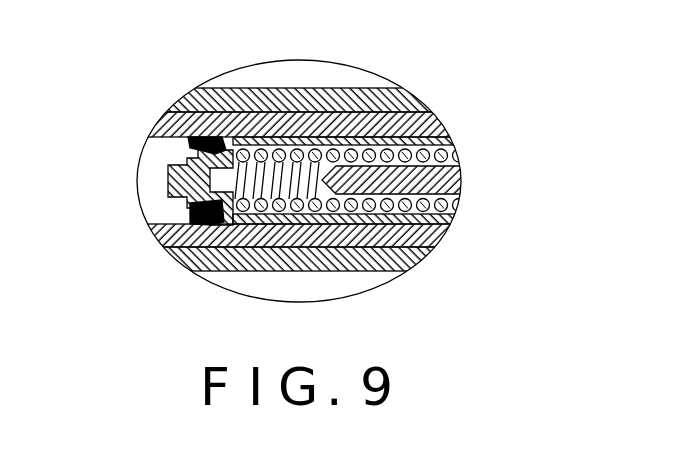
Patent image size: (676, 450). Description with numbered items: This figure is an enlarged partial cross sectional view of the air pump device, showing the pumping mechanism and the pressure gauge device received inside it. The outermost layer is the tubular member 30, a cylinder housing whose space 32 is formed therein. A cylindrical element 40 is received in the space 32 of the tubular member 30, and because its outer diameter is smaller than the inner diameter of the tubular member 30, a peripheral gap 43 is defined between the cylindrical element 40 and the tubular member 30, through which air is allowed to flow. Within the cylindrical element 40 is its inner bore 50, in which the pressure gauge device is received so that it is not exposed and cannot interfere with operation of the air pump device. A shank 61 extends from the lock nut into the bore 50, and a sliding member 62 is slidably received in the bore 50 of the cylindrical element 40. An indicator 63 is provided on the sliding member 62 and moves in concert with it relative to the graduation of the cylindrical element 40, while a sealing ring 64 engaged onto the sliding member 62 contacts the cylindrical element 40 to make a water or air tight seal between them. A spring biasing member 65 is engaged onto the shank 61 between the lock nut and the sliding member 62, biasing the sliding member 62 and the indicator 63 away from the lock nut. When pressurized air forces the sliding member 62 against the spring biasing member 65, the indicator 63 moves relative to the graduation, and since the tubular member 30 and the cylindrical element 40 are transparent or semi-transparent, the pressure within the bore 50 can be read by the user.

The tubular member 30 is at (182, 262).
The space 32 is at (433, 119).
The cylindrical element 40 is at (150, 233).
The peripheral gap 43 is at (291, 107).
The inner bore 50 is at (160, 136).
The shank 61 is at (460, 183).
The sliding member 62 is at (360, 126).
The indicator 63 is at (168, 188).
The sealing ring 64 is at (225, 143).
The spring biasing member 65 is at (302, 188).